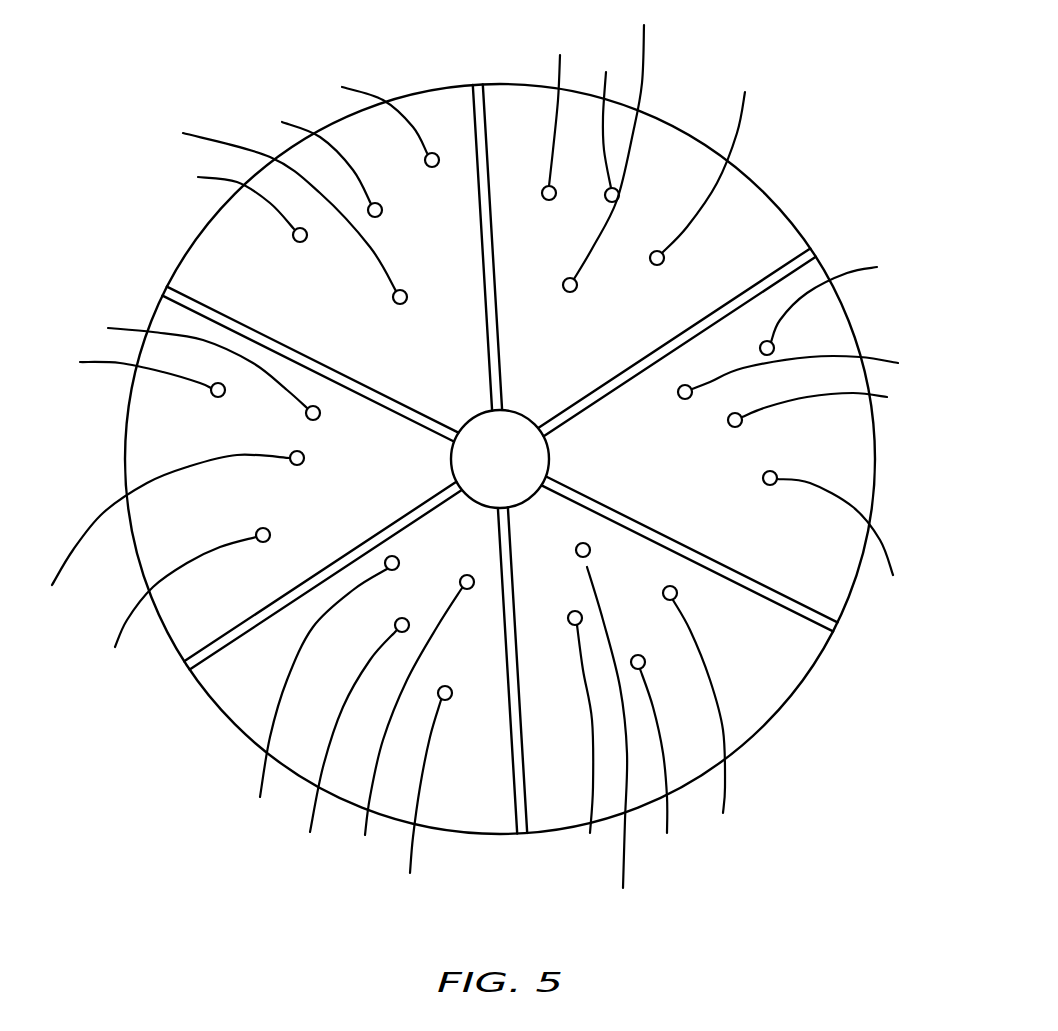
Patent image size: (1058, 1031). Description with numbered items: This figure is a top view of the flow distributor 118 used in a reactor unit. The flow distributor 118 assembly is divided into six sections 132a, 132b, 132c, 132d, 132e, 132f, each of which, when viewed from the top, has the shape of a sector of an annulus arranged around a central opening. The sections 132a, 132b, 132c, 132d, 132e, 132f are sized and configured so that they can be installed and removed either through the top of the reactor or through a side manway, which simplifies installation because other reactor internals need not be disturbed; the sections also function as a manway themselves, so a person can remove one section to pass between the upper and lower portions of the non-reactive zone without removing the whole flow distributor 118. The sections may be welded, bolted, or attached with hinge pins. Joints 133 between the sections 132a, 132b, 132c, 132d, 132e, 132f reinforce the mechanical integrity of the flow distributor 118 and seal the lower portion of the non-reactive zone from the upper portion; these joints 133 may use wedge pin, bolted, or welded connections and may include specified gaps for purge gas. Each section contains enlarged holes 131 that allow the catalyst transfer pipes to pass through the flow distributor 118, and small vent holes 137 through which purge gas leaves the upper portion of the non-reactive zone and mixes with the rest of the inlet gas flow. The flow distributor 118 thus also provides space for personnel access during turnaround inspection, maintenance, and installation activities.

The flow distributor 118 is at (813, 60).
The holes 131 is at (483, 444).
The section 132a is at (677, 150).
The section 132b is at (830, 332).
The section 132c is at (772, 680).
The section 132d is at (243, 705).
The section 132e is at (152, 440).
The section 132f is at (210, 255).
The joints 133 is at (479, 95).
The vent holes 137 is at (488, 470).